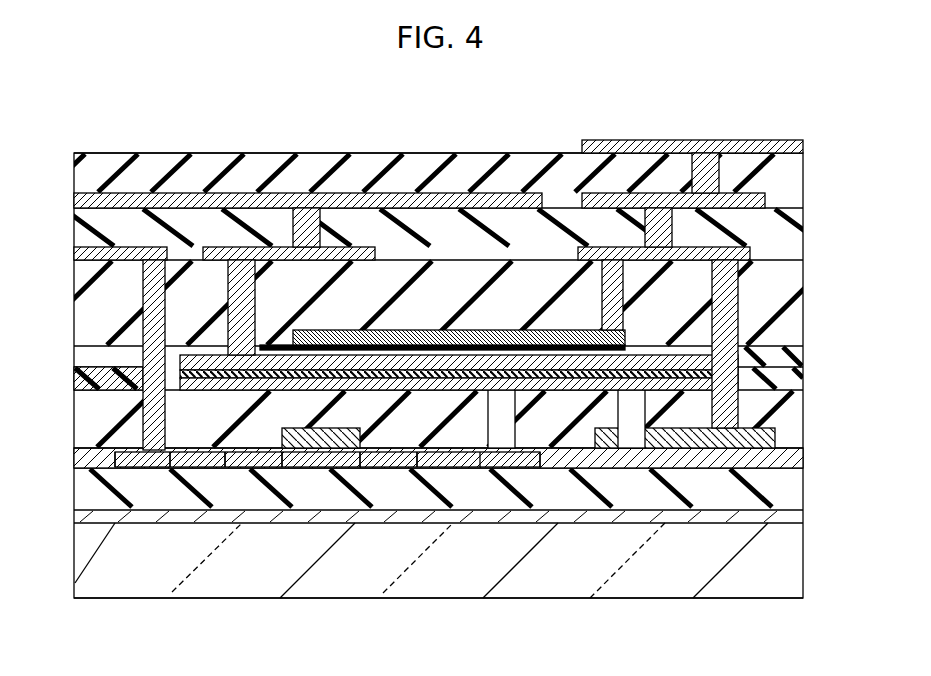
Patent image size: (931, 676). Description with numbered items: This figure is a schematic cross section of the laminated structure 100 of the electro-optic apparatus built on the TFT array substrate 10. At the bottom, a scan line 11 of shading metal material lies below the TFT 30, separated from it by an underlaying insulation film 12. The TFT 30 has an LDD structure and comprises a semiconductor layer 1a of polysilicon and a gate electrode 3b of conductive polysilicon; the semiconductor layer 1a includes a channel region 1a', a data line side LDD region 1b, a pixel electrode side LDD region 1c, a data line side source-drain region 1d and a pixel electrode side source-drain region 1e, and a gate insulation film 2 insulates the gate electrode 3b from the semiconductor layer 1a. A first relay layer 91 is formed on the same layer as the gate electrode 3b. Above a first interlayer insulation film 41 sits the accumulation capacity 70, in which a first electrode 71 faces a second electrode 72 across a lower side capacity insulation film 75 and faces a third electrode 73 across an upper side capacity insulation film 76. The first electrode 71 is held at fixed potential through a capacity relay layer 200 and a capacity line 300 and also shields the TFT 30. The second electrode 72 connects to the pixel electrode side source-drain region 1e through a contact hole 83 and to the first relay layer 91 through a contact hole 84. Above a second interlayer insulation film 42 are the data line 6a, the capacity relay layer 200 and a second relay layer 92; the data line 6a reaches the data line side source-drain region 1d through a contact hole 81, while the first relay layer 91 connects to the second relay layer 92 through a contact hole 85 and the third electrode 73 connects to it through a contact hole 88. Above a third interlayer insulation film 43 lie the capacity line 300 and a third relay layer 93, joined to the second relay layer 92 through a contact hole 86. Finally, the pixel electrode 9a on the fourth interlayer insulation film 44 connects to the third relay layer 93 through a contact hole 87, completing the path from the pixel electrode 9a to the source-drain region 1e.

The piezoelectric device 100 is at (660, 80).
The accumulation capacity 70 is at (442, 213).
The third electrode 73 is at (418, 329).
The first electrode 71 is at (462, 354).
The second electrode 72 is at (512, 389).
The contact hole 87 is at (700, 140).
The pixel electrode 9a is at (770, 140).
The fourth interlayer insulation film 44 is at (800, 161).
The third relay layer 93 is at (766, 200).
The contact hole 86 is at (665, 228).
The third interlayer insulation film 43 is at (800, 246).
The second interlayer insulation film 42 is at (800, 284).
The upper side capacity insulation film 76 is at (790, 353).
The lower side capacity insulation film 75 is at (773, 380).
The first interlayer insulation film 41 is at (800, 414).
The first relay layer 91 is at (767, 437).
The gate insulation film 2 is at (804, 459).
The underlaying insulation film 12 is at (800, 490).
The scan line 11 is at (800, 517).
The TFT array substrate 10 is at (800, 555).
The data line 6a is at (74, 250).
The contact hole 81 is at (143, 413).
The second relay layer 92 is at (636, 256).
The contact hole 88 is at (607, 292).
The contact hole 85 is at (718, 288).
The contact hole 83 is at (492, 413).
The contact hole 84 is at (632, 410).
The gate electrode 3b is at (361, 438).
The TFT 30 is at (270, 470).
The semiconductor layer 1a is at (133, 547).
The channel region 1a' is at (321, 547).
The data line side LDD region 1b is at (250, 470).
The pixel electrode side LDD region 1c is at (387, 470).
The data line side source-drain region 1d is at (192, 470).
The pixel electrode side source-drain region 1e is at (470, 470).
The capacity line 300 is at (167, 197).
The capacity relay layer 200 is at (241, 247).